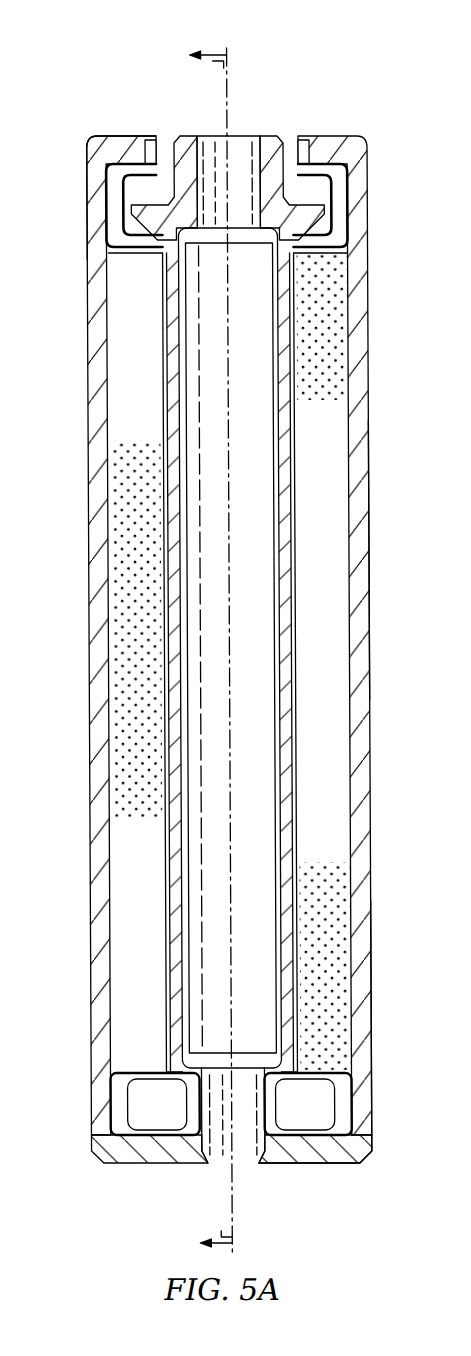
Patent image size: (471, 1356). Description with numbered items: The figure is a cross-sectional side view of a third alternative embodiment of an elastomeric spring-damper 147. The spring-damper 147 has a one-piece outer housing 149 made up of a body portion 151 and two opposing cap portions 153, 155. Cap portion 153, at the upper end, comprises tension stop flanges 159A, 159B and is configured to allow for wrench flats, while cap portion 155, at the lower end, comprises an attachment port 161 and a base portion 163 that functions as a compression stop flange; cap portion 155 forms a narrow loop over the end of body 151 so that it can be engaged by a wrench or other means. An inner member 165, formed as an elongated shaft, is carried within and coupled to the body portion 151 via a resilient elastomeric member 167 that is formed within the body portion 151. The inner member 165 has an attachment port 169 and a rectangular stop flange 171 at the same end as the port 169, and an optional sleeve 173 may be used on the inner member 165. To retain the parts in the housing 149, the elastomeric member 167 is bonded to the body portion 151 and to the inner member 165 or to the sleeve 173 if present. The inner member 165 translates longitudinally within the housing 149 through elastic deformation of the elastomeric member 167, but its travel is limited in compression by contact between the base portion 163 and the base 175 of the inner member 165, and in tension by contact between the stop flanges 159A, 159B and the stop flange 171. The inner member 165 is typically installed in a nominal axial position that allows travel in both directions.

The spring-damper 147 is at (303, 63).
The outer housing 149 is at (371, 357).
The body portion 151 is at (368, 528).
The cap portion 153 is at (82, 189).
The cap portion 155 is at (376, 1118).
The tension stop flange 159A is at (318, 136).
The tension stop flange 159B is at (118, 136).
The attachment port 161 is at (207, 1152).
The base portion 163 is at (318, 1165).
The inner member 165 is at (297, 626).
The resilient elastomeric member 167 is at (328, 430).
The attachment port 169 is at (199, 145).
The rectangular stop flange 171 is at (337, 222).
The sleeve 173 is at (302, 792).
The base 175 is at (132, 1105).